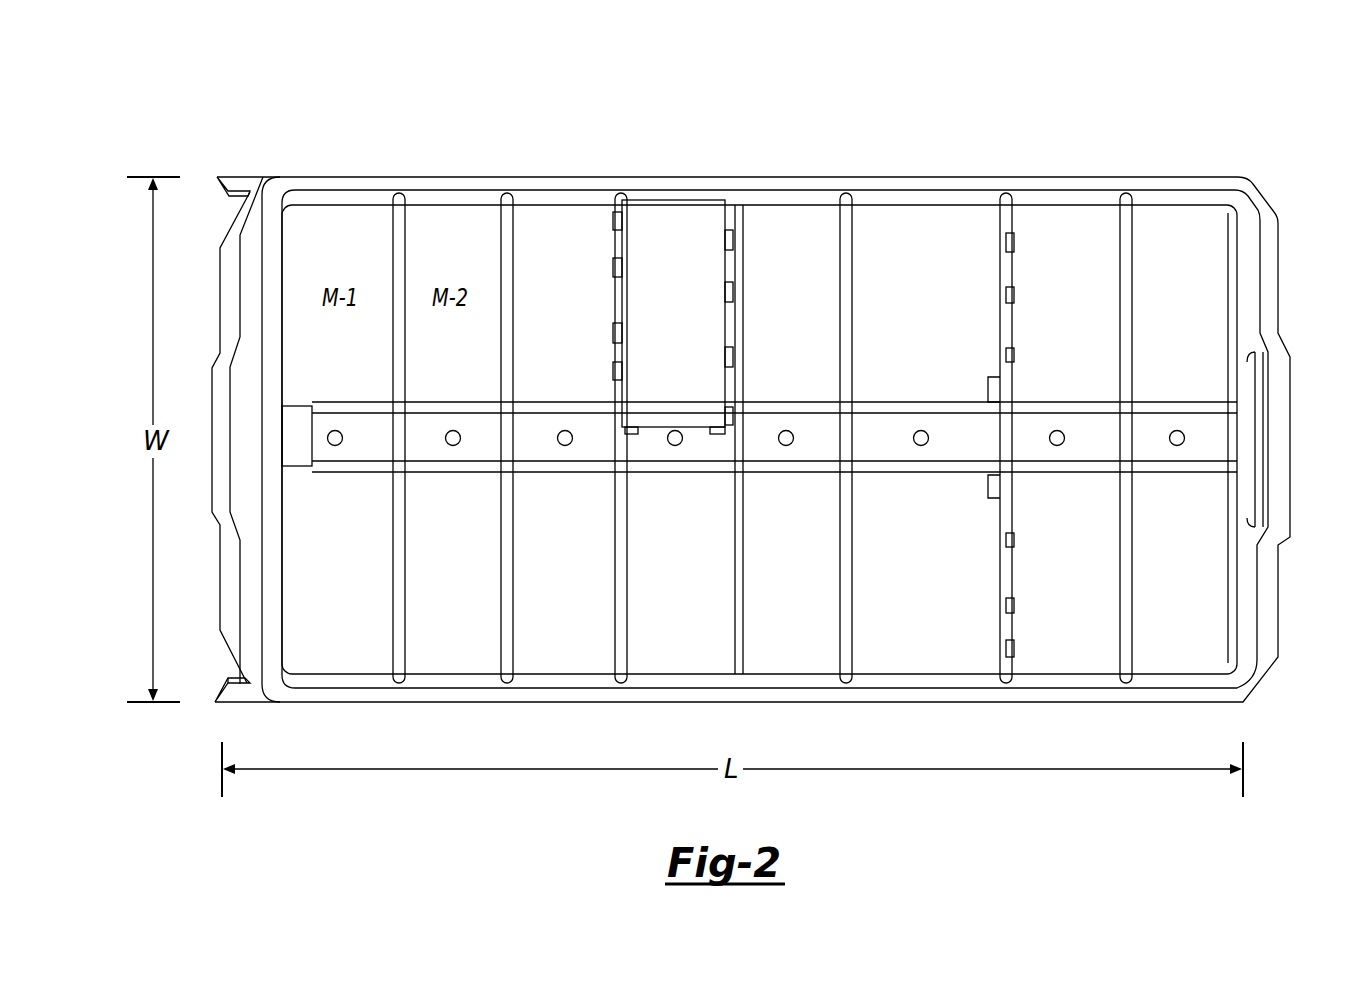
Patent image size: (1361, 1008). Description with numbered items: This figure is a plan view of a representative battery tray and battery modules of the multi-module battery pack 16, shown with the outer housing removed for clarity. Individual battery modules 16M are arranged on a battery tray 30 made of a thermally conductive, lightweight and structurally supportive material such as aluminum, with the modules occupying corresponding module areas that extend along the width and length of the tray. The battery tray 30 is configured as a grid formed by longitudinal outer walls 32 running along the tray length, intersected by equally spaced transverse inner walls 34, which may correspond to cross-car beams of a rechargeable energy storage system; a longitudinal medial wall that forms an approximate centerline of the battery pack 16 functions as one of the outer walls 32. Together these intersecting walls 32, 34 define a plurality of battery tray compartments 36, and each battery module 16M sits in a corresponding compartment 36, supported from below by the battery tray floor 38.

The multi-module battery pack 16 is at (1218, 88).
The battery module 16M is at (694, 315).
The battery tray 30 is at (1265, 610).
The longitudinal outer wall 32 is at (947, 183).
The transverse inner wall 34 is at (616, 293).
The battery tray compartment 36 is at (345, 205).
The battery tray floor 38 is at (340, 567).